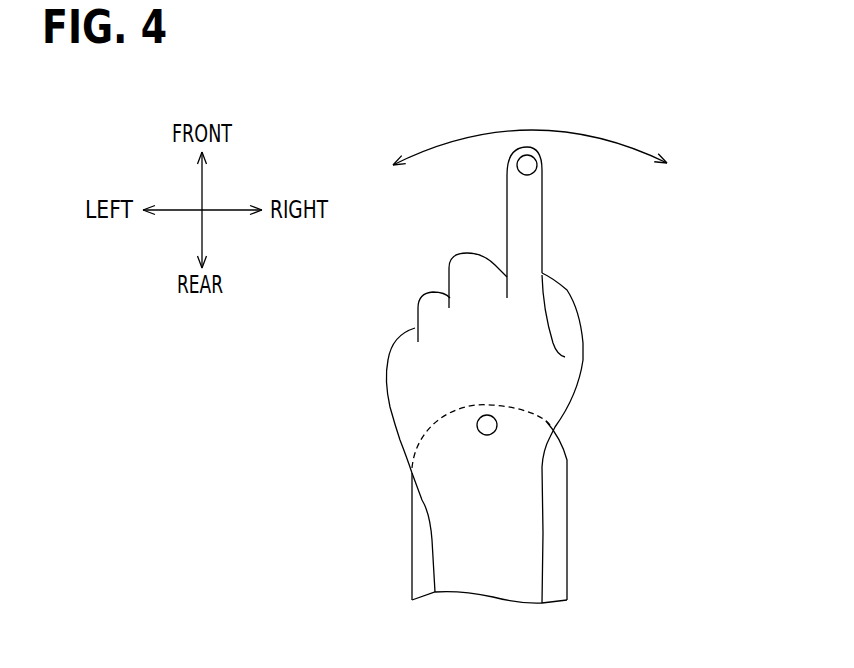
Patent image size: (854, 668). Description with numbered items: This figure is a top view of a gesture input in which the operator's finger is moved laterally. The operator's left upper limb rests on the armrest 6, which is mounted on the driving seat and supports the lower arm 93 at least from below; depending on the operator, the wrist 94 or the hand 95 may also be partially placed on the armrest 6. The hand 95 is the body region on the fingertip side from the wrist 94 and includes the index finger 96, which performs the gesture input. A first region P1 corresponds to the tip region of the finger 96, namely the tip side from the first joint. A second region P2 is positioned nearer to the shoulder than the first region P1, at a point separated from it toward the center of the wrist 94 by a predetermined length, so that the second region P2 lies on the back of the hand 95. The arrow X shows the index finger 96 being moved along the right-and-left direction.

The armrest 6 is at (567, 553).
The lower arm 93 is at (452, 572).
The wrist 94 is at (480, 514).
The hand 95 is at (530, 387).
The finger 96 is at (537, 237).
The first region P1 is at (530, 165).
The second region P2 is at (477, 424).
The arrow X is at (427, 150).